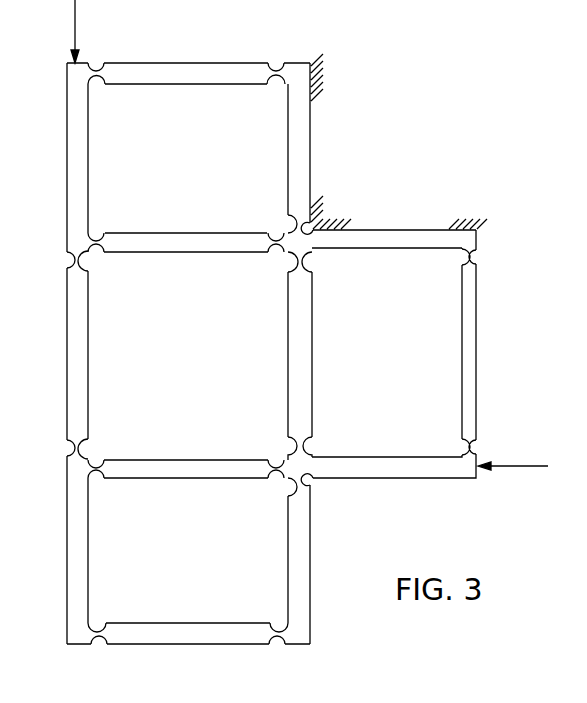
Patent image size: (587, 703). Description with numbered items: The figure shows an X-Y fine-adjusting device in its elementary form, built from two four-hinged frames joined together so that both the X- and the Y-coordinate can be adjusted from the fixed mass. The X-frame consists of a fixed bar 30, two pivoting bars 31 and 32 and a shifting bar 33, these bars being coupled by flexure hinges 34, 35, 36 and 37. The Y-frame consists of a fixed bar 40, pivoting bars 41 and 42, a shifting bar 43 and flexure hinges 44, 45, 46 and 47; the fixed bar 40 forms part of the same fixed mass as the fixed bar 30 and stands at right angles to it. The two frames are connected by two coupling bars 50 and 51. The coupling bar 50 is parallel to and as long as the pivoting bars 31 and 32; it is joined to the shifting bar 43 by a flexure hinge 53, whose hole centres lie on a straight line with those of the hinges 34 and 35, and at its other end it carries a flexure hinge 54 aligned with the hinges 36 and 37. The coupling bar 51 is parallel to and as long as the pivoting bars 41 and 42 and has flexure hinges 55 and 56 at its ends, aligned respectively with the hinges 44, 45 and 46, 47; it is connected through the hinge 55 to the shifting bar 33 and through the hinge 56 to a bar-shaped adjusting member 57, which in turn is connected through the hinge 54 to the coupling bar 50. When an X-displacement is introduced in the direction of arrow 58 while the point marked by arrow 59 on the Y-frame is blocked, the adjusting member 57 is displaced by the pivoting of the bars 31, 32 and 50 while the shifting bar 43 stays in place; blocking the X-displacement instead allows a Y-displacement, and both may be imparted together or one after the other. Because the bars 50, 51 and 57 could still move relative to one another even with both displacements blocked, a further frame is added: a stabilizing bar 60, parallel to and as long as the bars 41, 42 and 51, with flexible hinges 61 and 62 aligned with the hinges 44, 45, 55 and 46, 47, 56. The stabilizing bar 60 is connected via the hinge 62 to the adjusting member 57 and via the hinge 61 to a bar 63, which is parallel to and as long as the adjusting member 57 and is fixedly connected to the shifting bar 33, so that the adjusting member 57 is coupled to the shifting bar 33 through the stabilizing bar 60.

The fixed bar 30 is at (386, 243).
The pivoting bar 31 is at (296, 352).
The pivoting bar 32 is at (478, 344).
The shifting bar 33 is at (404, 479).
The flexure hinge 34 is at (302, 264).
The flexure hinge 35 is at (479, 258).
The flexure hinge 36 is at (303, 455).
The flexure hinge 37 is at (478, 446).
The fixed bar 40 is at (311, 134).
The pivoting bar 41 is at (190, 72).
The pivoting bar 42 is at (188, 242).
The shifting bar 43 is at (68, 152).
The flexure hinge 44 is at (270, 72).
The flexure hinge 45 is at (280, 242).
The flexure hinge 46 is at (108, 72).
The flexure hinge 47 is at (101, 242).
The coupling bar 50 is at (70, 356).
The coupling bar 51 is at (188, 468).
The flexure hinge 53 is at (68, 262).
The flexure hinge 54 is at (68, 448).
The flexure hinge 55 is at (278, 469).
The flexure hinge 56 is at (100, 469).
The adjusting member 57 is at (80, 470).
The arrow 58 is at (513, 479).
The arrow 59 is at (85, 31).
The stabilizing bar 60 is at (187, 645).
The flexible hinge 61 is at (278, 636).
The flexible hinge 62 is at (100, 636).
The bar 63 is at (312, 556).